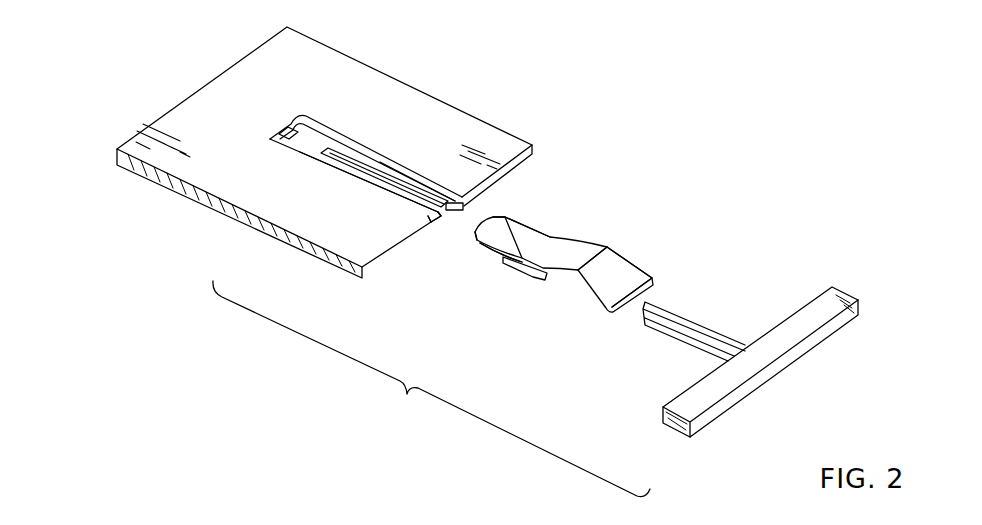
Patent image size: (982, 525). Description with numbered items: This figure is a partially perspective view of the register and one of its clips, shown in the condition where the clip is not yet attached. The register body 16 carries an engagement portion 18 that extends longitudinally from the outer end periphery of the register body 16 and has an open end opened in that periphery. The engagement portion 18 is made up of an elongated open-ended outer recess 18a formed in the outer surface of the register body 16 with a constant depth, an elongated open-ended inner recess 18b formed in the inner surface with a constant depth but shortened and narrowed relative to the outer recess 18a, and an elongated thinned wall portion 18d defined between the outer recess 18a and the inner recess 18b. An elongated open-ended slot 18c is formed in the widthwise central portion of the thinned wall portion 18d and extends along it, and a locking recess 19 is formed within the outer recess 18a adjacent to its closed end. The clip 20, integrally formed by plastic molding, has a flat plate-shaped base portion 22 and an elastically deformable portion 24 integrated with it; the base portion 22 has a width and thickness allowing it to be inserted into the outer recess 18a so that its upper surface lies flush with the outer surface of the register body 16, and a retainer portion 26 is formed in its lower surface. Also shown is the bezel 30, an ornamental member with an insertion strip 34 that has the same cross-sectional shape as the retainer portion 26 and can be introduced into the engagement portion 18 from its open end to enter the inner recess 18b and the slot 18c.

The register body 16 is at (330, 57).
The engagement portion 18 is at (375, 166).
The outer recess 18a is at (362, 155).
The inner recess 18b is at (436, 222).
The slot 18c is at (382, 180).
The thinned wall portion 18d is at (418, 183).
The locking recess 19 is at (283, 128).
The clip 20 is at (569, 251).
The base portion 22 is at (512, 233).
The elastically deformable portion 24 is at (613, 267).
The retainer portion 26 is at (528, 275).
The bezel 30 is at (792, 328).
The insertion strip 34 is at (690, 323).